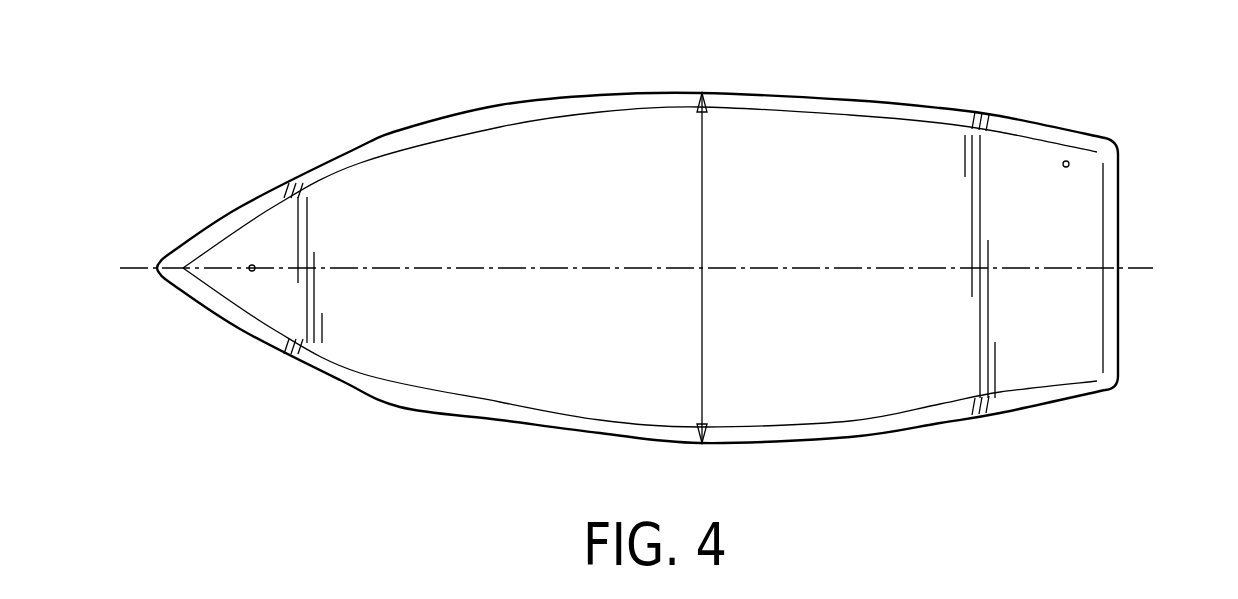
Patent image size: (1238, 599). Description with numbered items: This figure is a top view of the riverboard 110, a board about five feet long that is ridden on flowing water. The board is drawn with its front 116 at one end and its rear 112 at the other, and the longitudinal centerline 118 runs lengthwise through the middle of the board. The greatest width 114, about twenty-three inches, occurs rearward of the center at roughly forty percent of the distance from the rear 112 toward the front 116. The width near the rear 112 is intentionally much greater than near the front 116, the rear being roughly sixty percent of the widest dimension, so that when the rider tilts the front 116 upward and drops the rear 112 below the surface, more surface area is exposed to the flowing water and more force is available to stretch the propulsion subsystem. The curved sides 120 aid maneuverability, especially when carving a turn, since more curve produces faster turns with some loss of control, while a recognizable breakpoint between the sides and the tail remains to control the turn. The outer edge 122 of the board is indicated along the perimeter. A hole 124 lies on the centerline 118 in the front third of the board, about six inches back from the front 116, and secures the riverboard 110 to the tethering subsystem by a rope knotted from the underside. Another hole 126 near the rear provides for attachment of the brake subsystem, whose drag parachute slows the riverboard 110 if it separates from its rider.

The riverboard 110 is at (655, 245).
The rear 112 is at (1108, 232).
The greatest width 114 is at (703, 175).
The front 116 is at (178, 260).
The longitudinal centerline 118 is at (472, 268).
The curved sides 120 is at (497, 118).
The gunwale outer edge 122 is at (612, 93).
The hole 124 is at (252, 271).
The hole 126 is at (1066, 167).